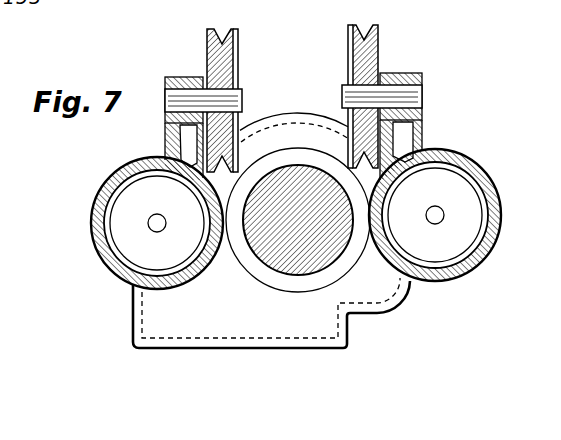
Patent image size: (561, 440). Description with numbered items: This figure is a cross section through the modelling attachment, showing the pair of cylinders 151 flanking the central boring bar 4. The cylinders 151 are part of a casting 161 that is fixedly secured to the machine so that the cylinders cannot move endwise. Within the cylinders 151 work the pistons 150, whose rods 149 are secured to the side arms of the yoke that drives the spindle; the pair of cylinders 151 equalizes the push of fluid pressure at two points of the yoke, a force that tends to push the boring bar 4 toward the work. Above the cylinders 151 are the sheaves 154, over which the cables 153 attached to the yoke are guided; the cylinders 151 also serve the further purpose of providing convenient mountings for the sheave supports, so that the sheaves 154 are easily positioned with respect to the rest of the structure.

The boring bar 4 is at (276, 259).
The rods 149 is at (150, 218).
The pistons 150 is at (121, 247).
The cylinders 151 is at (93, 230).
The cables 153 is at (242, 137).
The sheaves 154 is at (348, 30).
The casting 161 is at (131, 313).